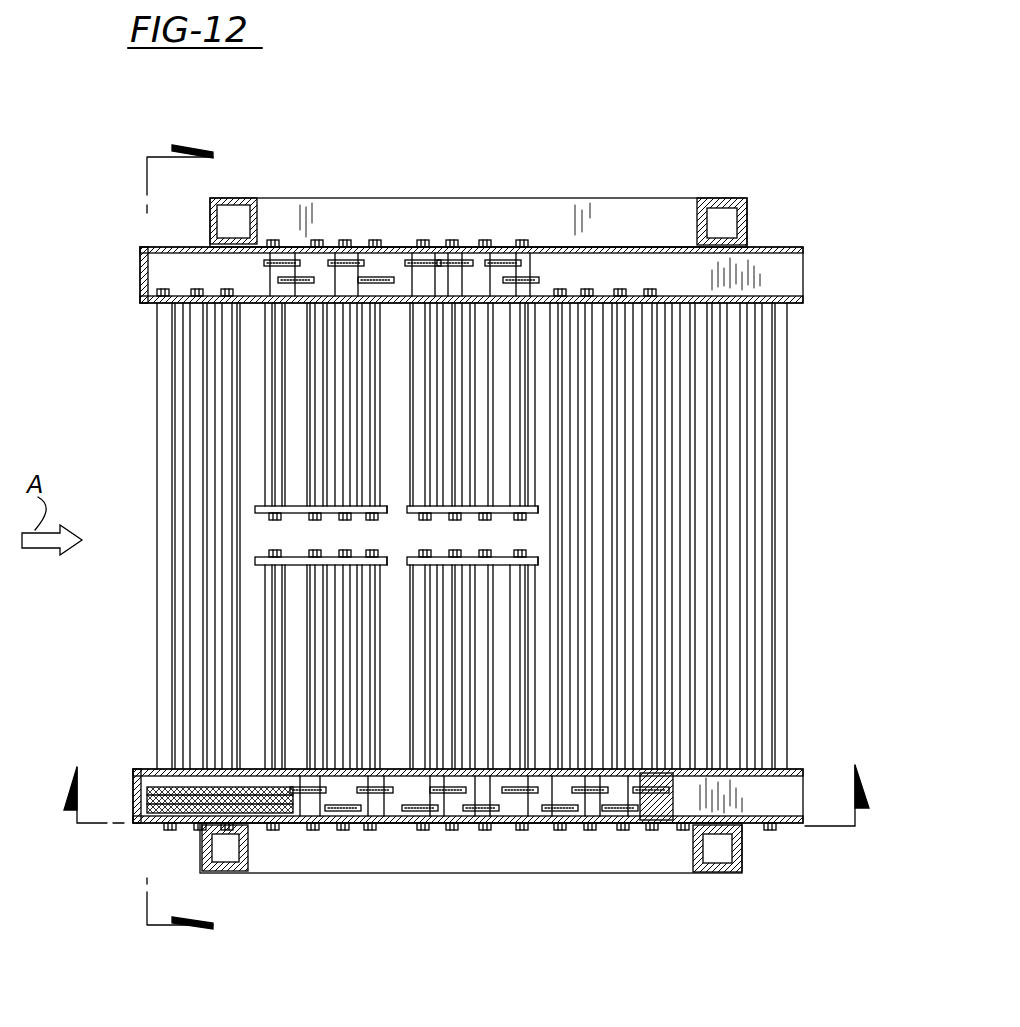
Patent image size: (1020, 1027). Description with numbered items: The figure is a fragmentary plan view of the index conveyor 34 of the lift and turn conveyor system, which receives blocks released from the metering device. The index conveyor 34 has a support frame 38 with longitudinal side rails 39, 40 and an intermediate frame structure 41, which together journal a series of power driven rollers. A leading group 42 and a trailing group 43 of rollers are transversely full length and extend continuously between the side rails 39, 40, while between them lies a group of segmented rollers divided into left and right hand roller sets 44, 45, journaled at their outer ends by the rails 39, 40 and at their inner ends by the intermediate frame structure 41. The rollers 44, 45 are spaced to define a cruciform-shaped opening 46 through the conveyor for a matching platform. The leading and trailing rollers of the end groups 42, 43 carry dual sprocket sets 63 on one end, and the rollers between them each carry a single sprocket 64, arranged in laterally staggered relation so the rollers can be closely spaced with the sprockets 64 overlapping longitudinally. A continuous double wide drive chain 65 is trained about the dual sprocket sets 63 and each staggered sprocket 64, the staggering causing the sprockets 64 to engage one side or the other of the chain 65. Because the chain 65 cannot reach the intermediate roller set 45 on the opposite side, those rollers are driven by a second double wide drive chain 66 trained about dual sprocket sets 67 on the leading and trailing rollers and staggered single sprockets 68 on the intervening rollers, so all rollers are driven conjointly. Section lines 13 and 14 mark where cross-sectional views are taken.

The section line 13- 13 is at (458, 777).
The section line 14- 14 is at (198, 546).
The index conveyor 34 is at (495, 158).
The support frame 38 is at (762, 193).
The longitudinal side rail 39 is at (795, 257).
The longitudinal side rail 40 is at (785, 825).
The intermediate frame structure 41 is at (255, 560).
The leading group of rollers 42 is at (223, 600).
The trailing group of rollers 43 is at (578, 300).
The left hand roller set 44 is at (417, 378).
The right hand roller set 45 is at (363, 673).
The cruciform-shaped opening 46 is at (414, 545).
The dual sprocket sets 63 is at (150, 770).
The single sprocket 64 is at (207, 823).
The double wide drive chain 65 is at (133, 822).
The second double wide drive chain 66 is at (322, 247).
The dual sprocket sets 67 is at (298, 247).
The single sprockets 68 is at (393, 248).